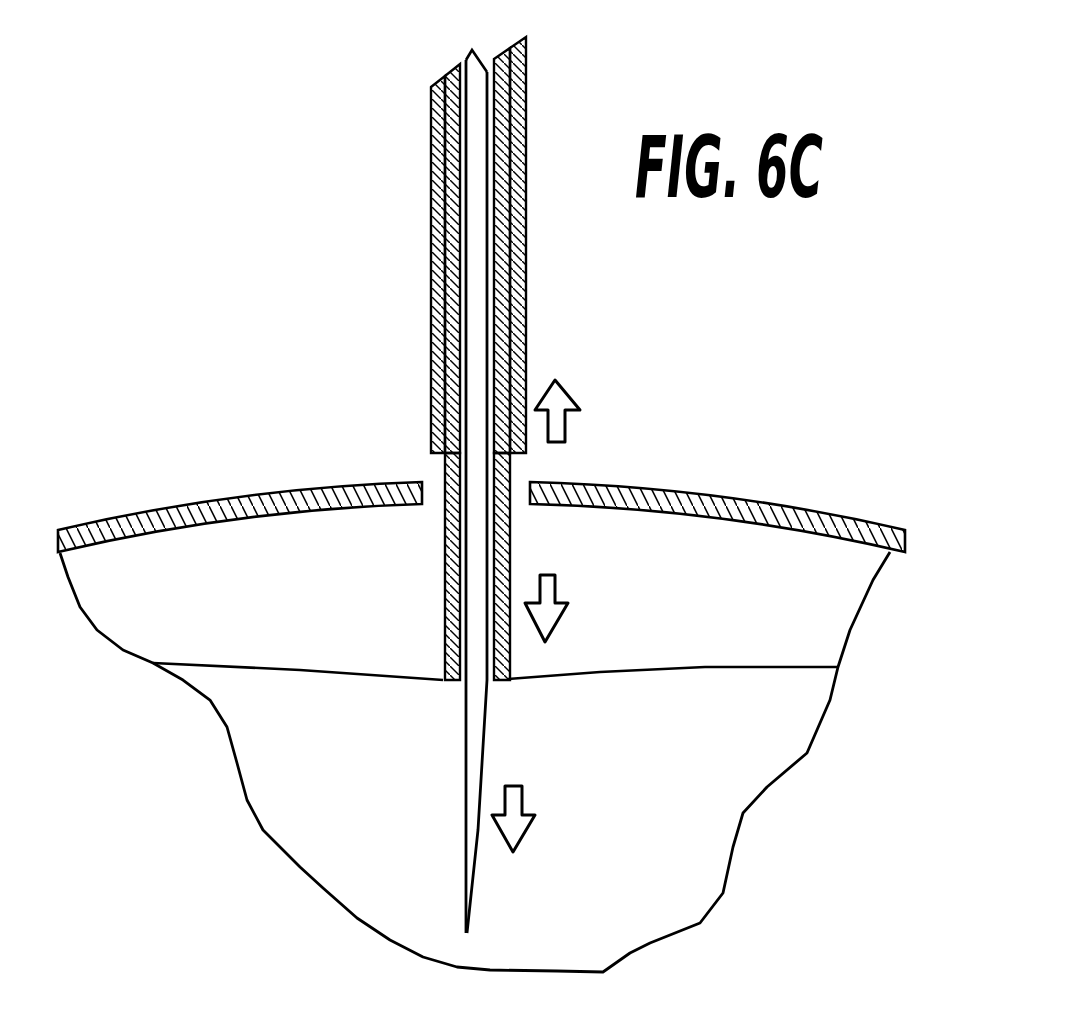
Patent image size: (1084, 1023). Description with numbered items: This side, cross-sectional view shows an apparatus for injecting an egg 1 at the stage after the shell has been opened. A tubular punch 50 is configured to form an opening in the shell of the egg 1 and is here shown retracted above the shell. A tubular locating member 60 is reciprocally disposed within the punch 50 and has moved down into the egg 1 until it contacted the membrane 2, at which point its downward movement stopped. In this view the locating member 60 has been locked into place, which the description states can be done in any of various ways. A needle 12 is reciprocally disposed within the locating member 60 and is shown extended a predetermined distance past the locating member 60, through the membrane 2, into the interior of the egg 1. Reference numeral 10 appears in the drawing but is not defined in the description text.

The egg 1 is at (831, 512).
The membrane 2 is at (705, 667).
The cannula 10 is at (536, 364).
The needle 12 is at (505, 737).
The tubular punch 50 is at (529, 88).
The tubular locating member 60 is at (444, 585).